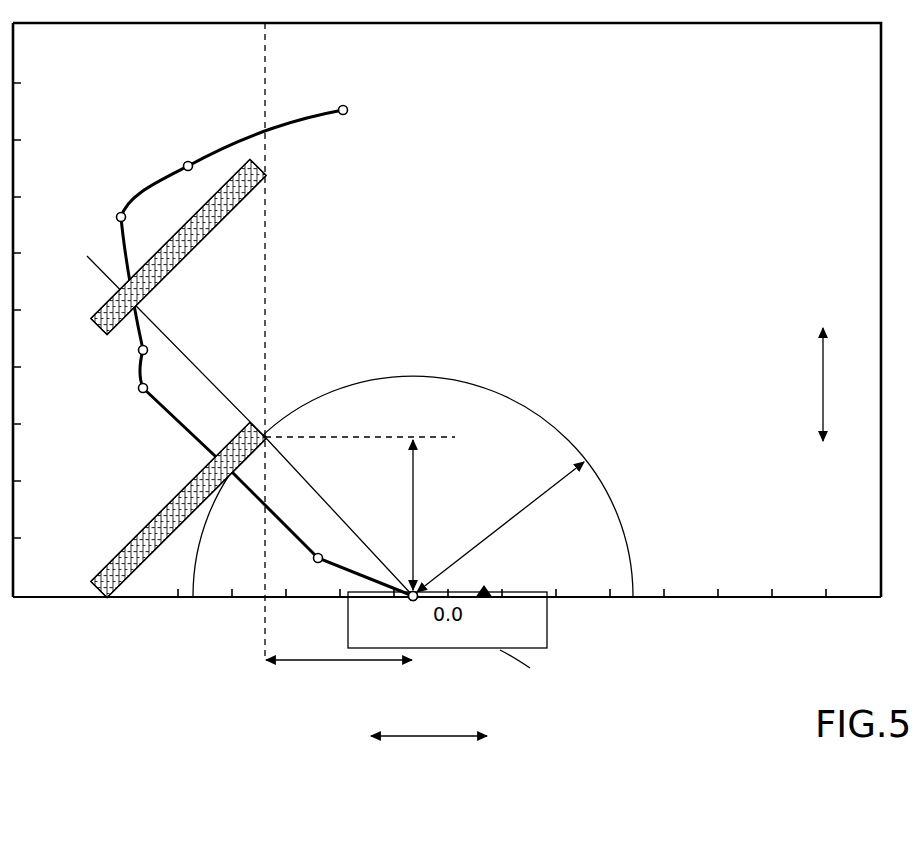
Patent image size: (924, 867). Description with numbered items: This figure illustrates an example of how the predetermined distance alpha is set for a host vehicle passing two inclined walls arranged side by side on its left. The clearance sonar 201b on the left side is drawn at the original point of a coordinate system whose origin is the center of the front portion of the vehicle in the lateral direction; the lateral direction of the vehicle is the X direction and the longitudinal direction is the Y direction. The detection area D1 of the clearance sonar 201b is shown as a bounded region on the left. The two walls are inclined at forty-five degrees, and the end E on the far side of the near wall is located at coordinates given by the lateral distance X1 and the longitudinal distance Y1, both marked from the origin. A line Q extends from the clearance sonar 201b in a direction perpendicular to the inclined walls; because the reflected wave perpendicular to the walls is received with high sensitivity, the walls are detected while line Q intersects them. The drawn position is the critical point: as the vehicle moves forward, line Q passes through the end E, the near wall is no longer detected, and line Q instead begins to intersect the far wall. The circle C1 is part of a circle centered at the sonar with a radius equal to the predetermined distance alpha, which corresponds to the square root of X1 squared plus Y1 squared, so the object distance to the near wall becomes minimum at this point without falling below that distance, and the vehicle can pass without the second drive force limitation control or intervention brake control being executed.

The detection area D1 is at (226, 139).
The line Q is at (176, 345).
The end E is at (267, 435).
The circle C1 is at (619, 503).
The clearance sonar 201b is at (420, 589).
The Y coordinate of the end Y1 is at (429, 515).
The X coordinate of the end X1 is at (339, 677).
The X direction X is at (429, 752).
The Y direction Y is at (832, 384).